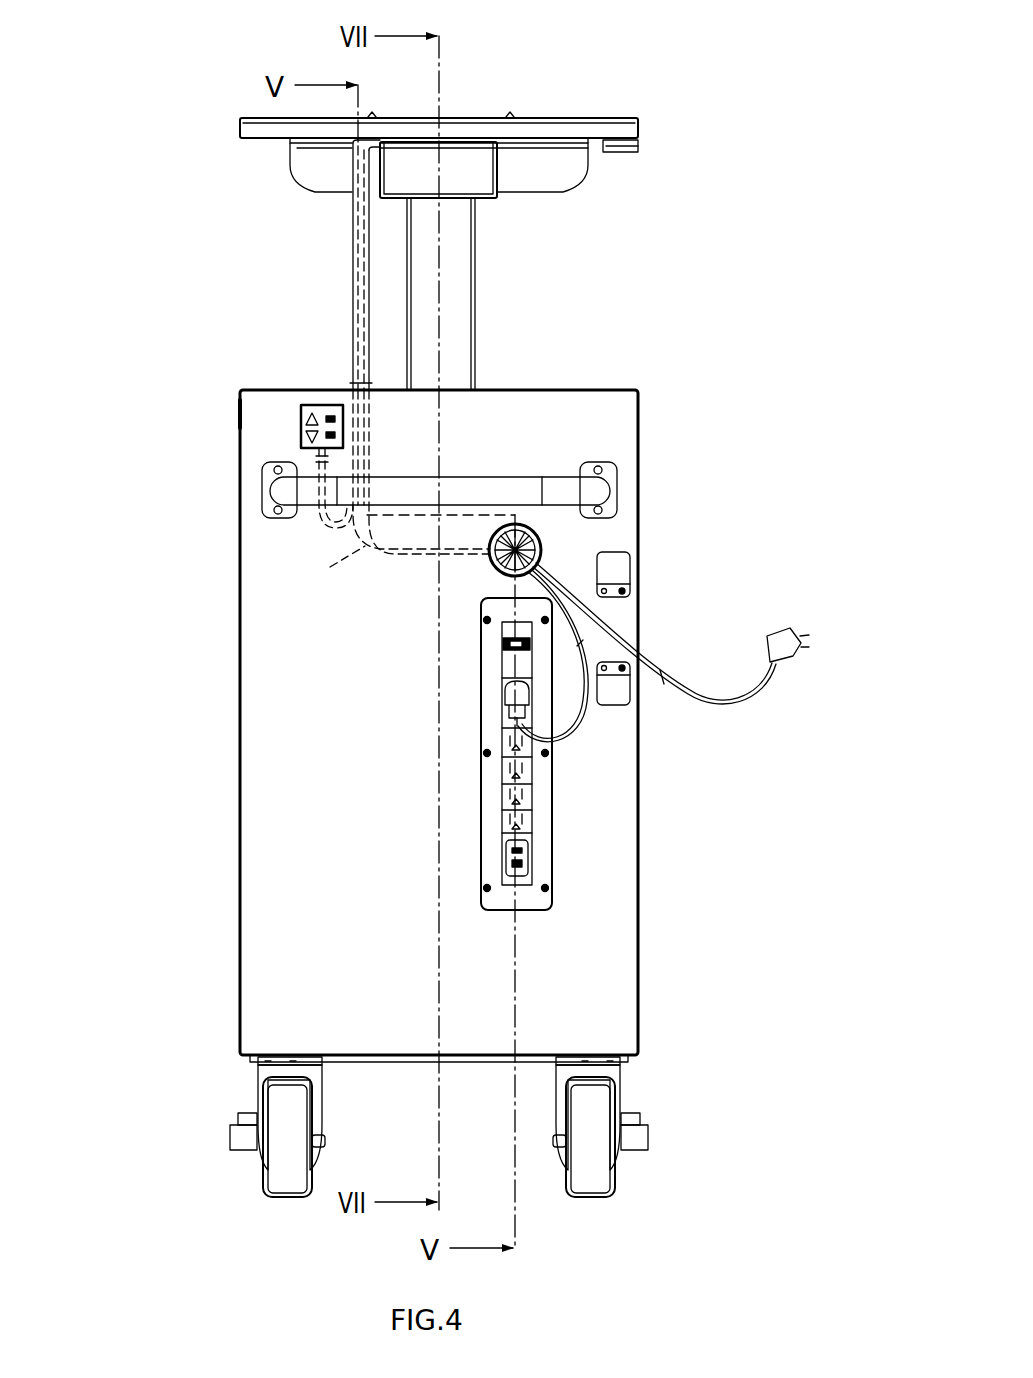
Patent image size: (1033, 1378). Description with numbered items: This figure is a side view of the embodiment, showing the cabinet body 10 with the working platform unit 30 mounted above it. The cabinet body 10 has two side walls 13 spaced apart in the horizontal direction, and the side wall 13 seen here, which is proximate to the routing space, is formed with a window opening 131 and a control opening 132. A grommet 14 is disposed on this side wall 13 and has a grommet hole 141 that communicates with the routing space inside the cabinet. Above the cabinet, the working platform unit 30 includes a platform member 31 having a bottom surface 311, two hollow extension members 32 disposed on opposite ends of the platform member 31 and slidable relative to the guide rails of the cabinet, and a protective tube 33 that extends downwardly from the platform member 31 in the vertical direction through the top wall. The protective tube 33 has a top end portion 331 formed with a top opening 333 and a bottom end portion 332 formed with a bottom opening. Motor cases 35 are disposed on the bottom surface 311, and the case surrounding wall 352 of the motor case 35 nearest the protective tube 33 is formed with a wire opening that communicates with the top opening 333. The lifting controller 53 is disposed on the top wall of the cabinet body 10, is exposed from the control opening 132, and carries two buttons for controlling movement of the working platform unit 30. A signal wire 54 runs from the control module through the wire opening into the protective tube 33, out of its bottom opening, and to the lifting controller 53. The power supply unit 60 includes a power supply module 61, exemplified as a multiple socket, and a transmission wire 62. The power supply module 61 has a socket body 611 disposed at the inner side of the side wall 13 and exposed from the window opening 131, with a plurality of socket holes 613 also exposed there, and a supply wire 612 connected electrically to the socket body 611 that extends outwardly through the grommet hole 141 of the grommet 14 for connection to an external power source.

The cabinet body 10 is at (238, 762).
The side walls 13 is at (267, 877).
The window opening 131 is at (527, 817).
The control opening 132 is at (300, 430).
The grommet 14 is at (548, 478).
The grommet hole 141 is at (530, 540).
The working platform unit 30 is at (485, 104).
The platform member 31 is at (572, 118).
The bottom surface 311 is at (596, 142).
The extension members 32 is at (460, 238).
The protective tube 33 is at (346, 304).
The top end portion 331 is at (362, 145).
The bottom end portion 332 is at (345, 383).
The top opening 333 is at (372, 140).
The motor cases 35 is at (469, 126).
The case surrounding wall 352 is at (474, 160).
The lifting controller 53 is at (226, 429).
The signal wire 54 is at (330, 527).
The power supply unit 60 is at (646, 754).
The power supply module 61 is at (658, 778).
The socket body 611 is at (527, 825).
The supply wire 612 is at (703, 690).
The socket holes 613 is at (527, 765).
The transmission wire 62 is at (330, 567).